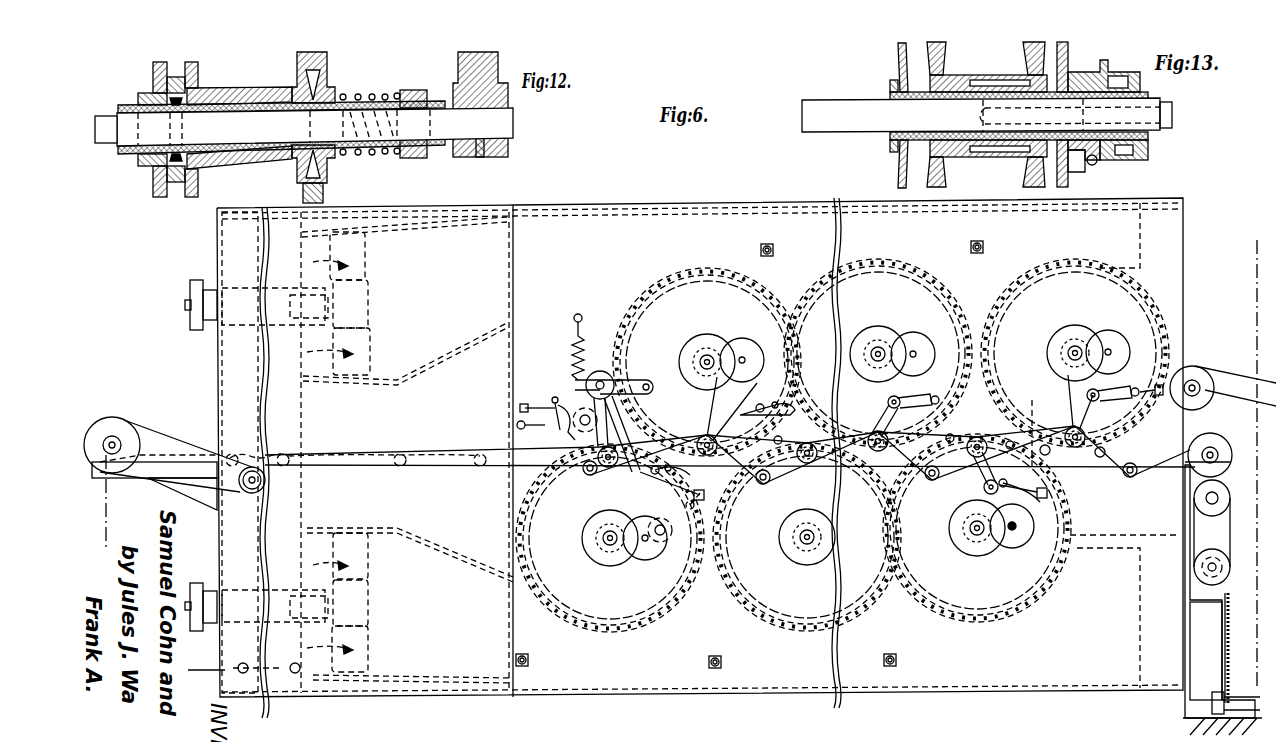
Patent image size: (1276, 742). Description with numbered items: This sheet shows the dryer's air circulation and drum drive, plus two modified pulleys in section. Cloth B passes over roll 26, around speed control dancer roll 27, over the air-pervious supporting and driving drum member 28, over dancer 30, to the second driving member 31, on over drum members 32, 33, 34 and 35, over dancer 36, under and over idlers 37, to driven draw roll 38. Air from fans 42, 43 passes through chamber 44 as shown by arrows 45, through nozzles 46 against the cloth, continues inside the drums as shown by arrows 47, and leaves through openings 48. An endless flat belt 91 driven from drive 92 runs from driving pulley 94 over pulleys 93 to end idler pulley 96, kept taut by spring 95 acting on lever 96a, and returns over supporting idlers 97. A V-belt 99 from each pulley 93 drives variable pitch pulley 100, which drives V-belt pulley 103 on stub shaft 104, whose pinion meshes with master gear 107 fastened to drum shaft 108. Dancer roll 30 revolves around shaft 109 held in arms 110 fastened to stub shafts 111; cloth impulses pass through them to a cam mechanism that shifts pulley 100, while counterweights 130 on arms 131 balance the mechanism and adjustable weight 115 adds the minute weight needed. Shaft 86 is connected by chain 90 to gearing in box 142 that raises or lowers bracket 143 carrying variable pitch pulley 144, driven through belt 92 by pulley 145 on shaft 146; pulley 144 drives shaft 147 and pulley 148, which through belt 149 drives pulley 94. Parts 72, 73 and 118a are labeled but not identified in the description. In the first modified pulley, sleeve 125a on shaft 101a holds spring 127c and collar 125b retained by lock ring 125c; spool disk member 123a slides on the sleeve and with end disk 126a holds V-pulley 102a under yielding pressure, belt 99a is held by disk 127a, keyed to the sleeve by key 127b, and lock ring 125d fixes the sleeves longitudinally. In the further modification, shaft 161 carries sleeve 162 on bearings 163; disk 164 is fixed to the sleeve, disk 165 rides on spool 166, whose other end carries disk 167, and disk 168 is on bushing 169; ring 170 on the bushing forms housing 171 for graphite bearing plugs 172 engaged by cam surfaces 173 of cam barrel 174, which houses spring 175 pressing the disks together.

In FIG. 6, the roll 26 is at (1200, 395).
In FIG. 6, the speed control dancer roll 27 is at (1170, 433).
In FIG. 6, the cloth supporting and driving drum member 28 is at (1063, 272).
In FIG. 6, the dancer roll 30 is at (780, 437).
In FIG. 6, the second supporting and driving member 31 is at (995, 612).
In FIG. 6, the drum member 32 is at (910, 278).
In FIG. 6, the drum member 33 is at (810, 624).
In FIG. 6, the drum member 34 is at (737, 280).
In FIG. 6, the drum member 35 is at (633, 618).
In FIG. 6, the dancer 36 is at (603, 430).
In FIG. 6, the idlers 37 is at (233, 455).
In FIG. 6, the driven draw roll 38 is at (115, 443).
In FIG. 6, the fan 42 is at (367, 262).
In FIG. 6, the fan 43 is at (370, 638).
In FIG. 6, the chamber 44 is at (666, 240).
In FIG. 6, the arrows 45 is at (442, 288).
In FIG. 6, the nozzles 46 is at (713, 269).
In FIG. 6, the arrows 47 is at (700, 355).
In FIG. 6, the opening 48 is at (718, 357).
In FIG. 6, the belt 72 is at (1245, 377).
In FIG. 6, the belt guide 73 is at (1223, 375).
In FIG. 6, the shaft 86 is at (1243, 697).
In FIG. 6, the chain 90 is at (1230, 640).
In FIG. 6, the endless flat belt 91 is at (1102, 468).
In FIG. 6, the drive belt 92 is at (1228, 542).
In FIG. 6, the pulley 93 is at (615, 453).
In FIG. 6, the driving pulley 94 is at (1217, 462).
In FIG. 6, the spring 95 is at (574, 350).
In FIG. 6, the end idler pulley 96 is at (599, 371).
In FIG. 6, the lever 96a is at (635, 386).
In FIG. 6, the supporting idlers 97 is at (586, 473).
In FIG. 6, the V-belt 99 is at (997, 458).
In FIG. 6, the variable pitch pulley 100 is at (983, 490).
In FIG. 6, the V-belt pulley 103 is at (660, 555).
In FIG. 6, the stub shaft 104 is at (1023, 525).
In FIG. 6, the master gear 107 is at (583, 535).
In FIG. 6, the driving and supporting shaft 108 is at (607, 542).
In FIG. 6, the shaft 109 is at (1046, 447).
In FIG. 6, the arms 110 is at (1032, 452).
In FIG. 6, the stub shaft 111 is at (1043, 502).
In FIG. 6, the adjustable weight 115 is at (518, 424).
In FIG. 6, the counterweights 130 is at (575, 415).
In FIG. 6, the arms 131 is at (575, 410).
In FIG. 6, the box 142 is at (1209, 603).
In FIG. 6, the bracket 143 is at (1193, 567).
In FIG. 6, the variable pitch pulley 144 is at (1213, 582).
In FIG. 6, the pulley 145 is at (1205, 498).
In FIG. 6, the shaft 146 is at (1200, 508).
In FIG. 6, the shaft 147 is at (1202, 577).
In FIG. 6, the pulley 148 is at (1242, 638).
In FIG. 6, the belt 149 is at (1244, 482).
In FIG. 6, the cloth B is at (1200, 420).
In FIG. 12, the belt 99a is at (323, 196).
In FIG. 12, the shaft 101a is at (103, 137).
In FIG. 12, the V-pulley 102a is at (177, 178).
In FIG. 12, the bearing block 118a is at (508, 148).
In FIG. 12, the spool disk member 123a is at (240, 90).
In FIG. 12, the sleeve 125a is at (247, 152).
In FIG. 12, the spring-holding disk or collar 125b is at (424, 96).
In FIG. 12, the lock ring 125c is at (428, 150).
In FIG. 12, the lock ring 125d is at (115, 155).
In FIG. 12, the end disk 126a is at (156, 80).
In FIG. 12, the disk 127a is at (327, 67).
In FIG. 12, the key 127b is at (330, 100).
In FIG. 12, the spring 127c is at (383, 155).
In FIG. 13, the shaft 161 is at (827, 125).
In FIG. 13, the sleeve 162 is at (893, 93).
In FIG. 13, the bearings 163 is at (927, 102).
In FIG. 13, the disk 164 is at (897, 48).
In FIG. 13, the disk 165 is at (944, 53).
In FIG. 13, the spool 166 is at (965, 83).
In FIG. 13, the disk 167 is at (1032, 53).
In FIG. 13, the disk 168 is at (1067, 47).
In FIG. 13, the bushing 169 is at (1092, 75).
In FIG. 13, the ring 170 is at (1075, 60).
In FIG. 13, the housing 171 is at (1083, 155).
In FIG. 13, the graphite bearing plugs 172 is at (1090, 162).
In FIG. 13, the cam surface 173 is at (1103, 160).
In FIG. 13, the cam barrel 174 is at (1143, 148).
In FIG. 13, the spring 175 is at (1123, 153).